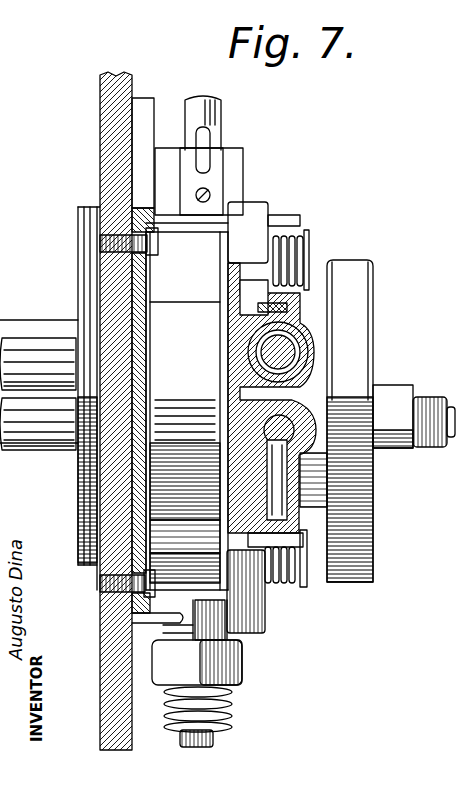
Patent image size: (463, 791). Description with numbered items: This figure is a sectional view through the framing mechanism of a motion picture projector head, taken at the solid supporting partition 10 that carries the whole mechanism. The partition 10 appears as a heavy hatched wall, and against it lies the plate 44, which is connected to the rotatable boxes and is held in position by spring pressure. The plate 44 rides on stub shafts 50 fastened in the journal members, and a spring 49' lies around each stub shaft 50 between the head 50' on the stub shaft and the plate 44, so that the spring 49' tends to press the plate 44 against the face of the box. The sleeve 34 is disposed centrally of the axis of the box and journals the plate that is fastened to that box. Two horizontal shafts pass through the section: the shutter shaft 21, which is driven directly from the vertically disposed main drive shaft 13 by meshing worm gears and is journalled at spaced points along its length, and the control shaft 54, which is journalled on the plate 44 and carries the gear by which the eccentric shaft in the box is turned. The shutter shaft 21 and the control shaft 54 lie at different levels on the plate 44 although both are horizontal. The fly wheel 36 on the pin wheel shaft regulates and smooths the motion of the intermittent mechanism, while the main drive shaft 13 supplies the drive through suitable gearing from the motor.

The partition 10 is at (99, 160).
The main drive shaft 13 is at (222, 128).
The sleeve 34 is at (46, 326).
The plate 44 is at (238, 305).
The stub shaft 50 is at (312, 253).
The spring 49' is at (328, 413).
The head 50' is at (358, 262).
The shutter shaft 21 is at (300, 352).
The control shaft 54 is at (294, 430).
The fly wheel 36 is at (374, 515).